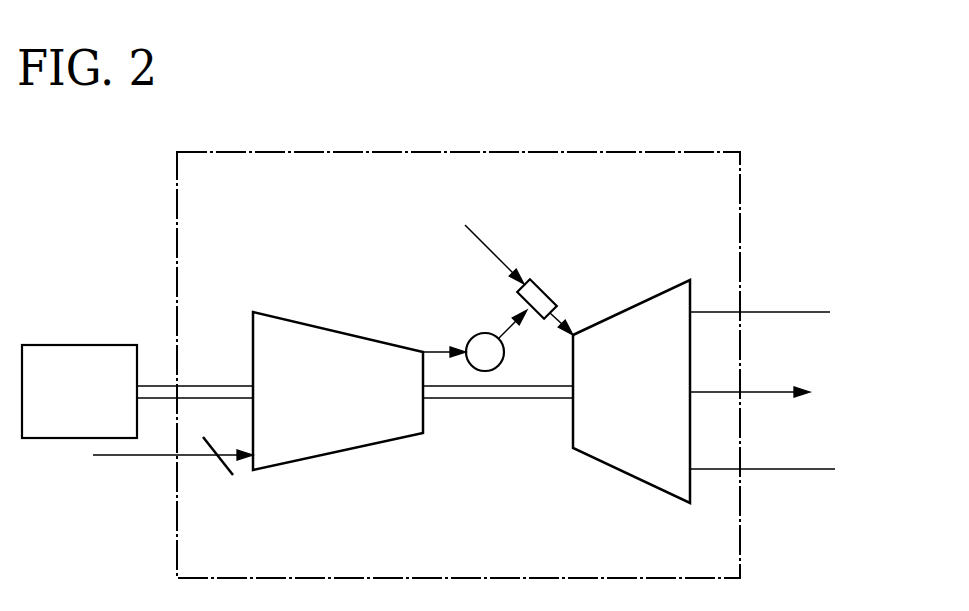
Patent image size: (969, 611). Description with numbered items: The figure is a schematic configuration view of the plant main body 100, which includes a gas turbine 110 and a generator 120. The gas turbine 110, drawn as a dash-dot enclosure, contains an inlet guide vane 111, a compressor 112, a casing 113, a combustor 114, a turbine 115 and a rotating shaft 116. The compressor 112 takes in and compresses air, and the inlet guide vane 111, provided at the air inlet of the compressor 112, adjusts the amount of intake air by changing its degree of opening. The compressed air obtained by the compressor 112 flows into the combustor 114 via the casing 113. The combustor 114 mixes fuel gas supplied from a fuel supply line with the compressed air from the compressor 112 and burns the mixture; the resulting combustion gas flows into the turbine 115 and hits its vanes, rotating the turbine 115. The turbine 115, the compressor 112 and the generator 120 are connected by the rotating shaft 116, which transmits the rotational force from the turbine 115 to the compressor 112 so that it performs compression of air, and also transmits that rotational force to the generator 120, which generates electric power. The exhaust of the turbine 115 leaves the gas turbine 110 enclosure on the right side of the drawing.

The plant main body 100 is at (853, 229).
The gas turbine 110 is at (668, 146).
The inlet guide vane 111 is at (225, 472).
The compressor 112 is at (330, 325).
The casing 113 is at (485, 332).
The combustor 114 is at (547, 293).
The turbine 115 is at (625, 475).
The rotating shaft 116 is at (217, 385).
The generator 120 is at (65, 343).